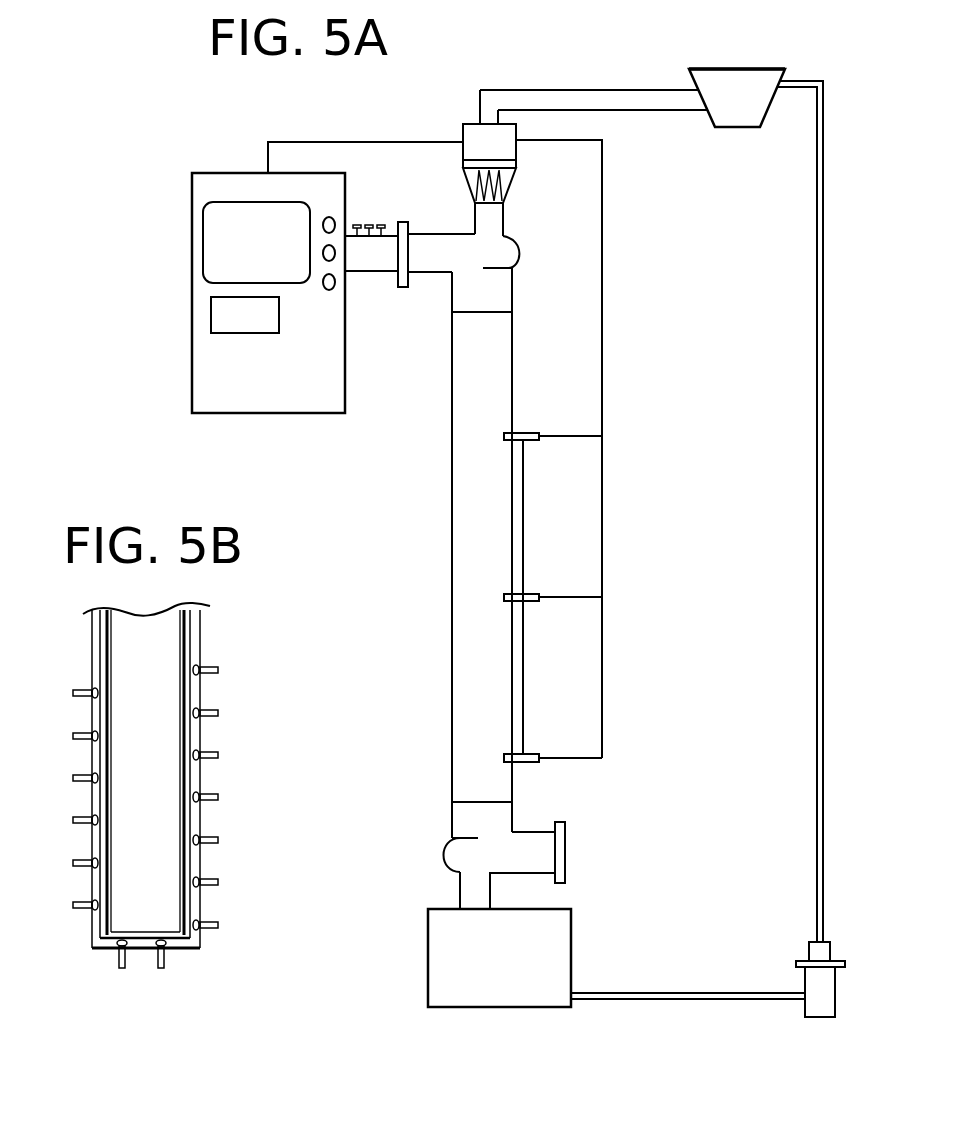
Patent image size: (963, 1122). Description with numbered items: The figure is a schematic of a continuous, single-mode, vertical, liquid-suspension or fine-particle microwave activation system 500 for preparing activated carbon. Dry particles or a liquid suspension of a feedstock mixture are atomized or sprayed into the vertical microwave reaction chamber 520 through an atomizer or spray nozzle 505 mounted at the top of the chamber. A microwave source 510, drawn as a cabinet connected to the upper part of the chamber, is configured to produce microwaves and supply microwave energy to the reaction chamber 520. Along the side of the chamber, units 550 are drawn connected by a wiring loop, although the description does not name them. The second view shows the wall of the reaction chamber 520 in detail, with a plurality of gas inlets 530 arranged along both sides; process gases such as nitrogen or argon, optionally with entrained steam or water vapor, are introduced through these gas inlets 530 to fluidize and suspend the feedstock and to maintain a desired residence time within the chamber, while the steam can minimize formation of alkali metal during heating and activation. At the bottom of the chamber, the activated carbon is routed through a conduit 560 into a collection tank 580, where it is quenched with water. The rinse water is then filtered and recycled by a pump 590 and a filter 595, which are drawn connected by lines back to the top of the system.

In FIG. 5A, the microwave activation system 500 is at (100, 186).
In FIG. 5A, the atomizer or spray nozzle 505 is at (517, 182).
In FIG. 5A, the microwave source 510 is at (202, 393).
In FIG. 5A, the microwave reaction chamber 520 is at (452, 538).
In FIG. 5B, the microwave reaction chamber 520 is at (192, 648).
In FIG. 5B, the gas inlets 530 is at (197, 750).
In FIG. 5A, the heaters 550 is at (532, 596).
In FIG. 5A, the conduit 560 is at (520, 845).
In FIG. 5A, the collection tank 580 is at (458, 1008).
In FIG. 5A, the pump 590 is at (823, 1005).
In FIG. 5A, the filter 595 is at (737, 82).